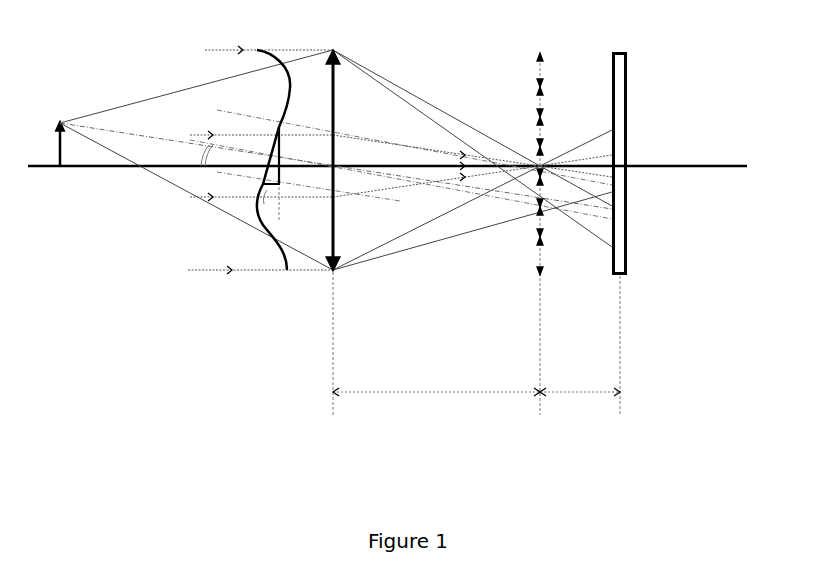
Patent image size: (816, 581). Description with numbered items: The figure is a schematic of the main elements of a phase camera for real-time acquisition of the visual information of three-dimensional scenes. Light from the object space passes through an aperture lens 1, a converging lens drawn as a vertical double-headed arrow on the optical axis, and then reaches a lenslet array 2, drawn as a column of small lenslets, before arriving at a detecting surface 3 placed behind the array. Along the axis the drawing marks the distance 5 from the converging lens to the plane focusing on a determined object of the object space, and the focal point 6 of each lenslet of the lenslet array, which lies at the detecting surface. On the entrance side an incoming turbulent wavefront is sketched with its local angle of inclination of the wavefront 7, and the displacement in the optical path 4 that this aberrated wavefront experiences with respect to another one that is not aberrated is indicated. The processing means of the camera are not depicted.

The aperture lens 1 is at (332, 212).
The lenslet array 2 is at (539, 212).
The detecting surface 3 is at (616, 212).
The displacement in the optical path 4 is at (264, 189).
The distance 5 is at (436, 409).
The focal point 6 is at (580, 409).
The local angle of inclination of the wavefront 7 is at (235, 183).